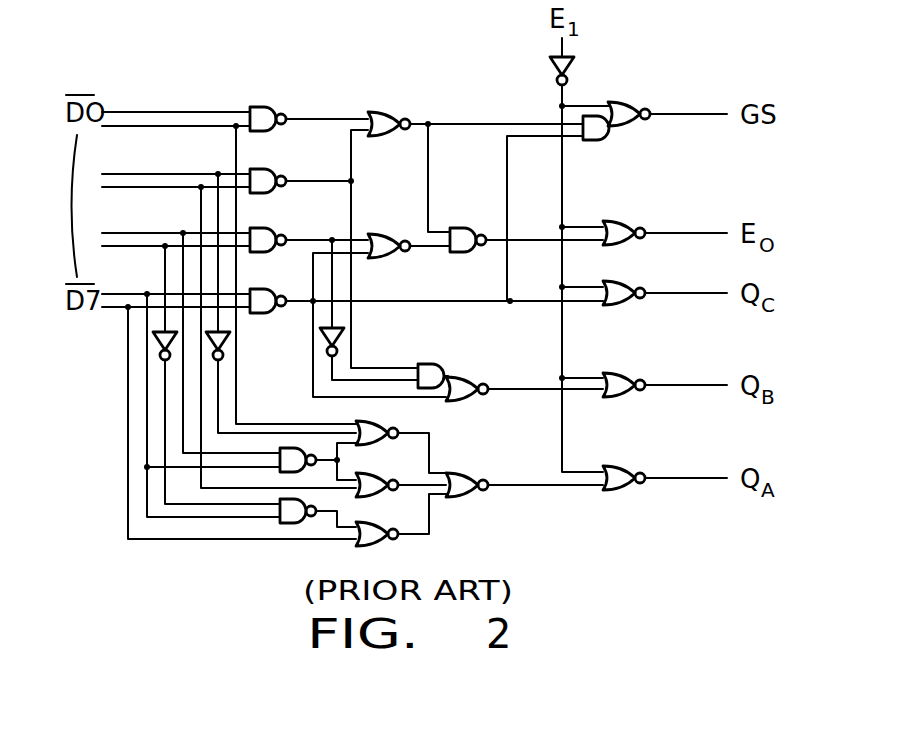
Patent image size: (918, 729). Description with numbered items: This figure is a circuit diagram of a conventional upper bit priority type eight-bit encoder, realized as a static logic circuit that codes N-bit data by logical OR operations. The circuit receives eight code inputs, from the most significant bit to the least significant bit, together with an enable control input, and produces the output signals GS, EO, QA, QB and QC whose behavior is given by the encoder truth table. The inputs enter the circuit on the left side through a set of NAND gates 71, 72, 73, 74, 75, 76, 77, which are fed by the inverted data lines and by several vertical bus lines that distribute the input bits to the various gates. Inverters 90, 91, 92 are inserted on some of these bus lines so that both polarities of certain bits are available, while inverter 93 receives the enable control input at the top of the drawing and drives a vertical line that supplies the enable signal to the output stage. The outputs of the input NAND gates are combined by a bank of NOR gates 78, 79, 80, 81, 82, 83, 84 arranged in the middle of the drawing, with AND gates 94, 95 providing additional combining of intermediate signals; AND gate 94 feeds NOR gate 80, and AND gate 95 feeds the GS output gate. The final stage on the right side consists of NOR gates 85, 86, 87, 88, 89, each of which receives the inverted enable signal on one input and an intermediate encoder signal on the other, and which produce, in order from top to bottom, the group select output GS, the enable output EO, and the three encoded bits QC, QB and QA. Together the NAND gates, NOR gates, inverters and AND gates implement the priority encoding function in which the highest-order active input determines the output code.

The NAND gate 71 is at (268, 108).
The NAND gate 72 is at (264, 170).
The NAND gate 73 is at (264, 229).
The NAND gate 74 is at (264, 290).
The NAND gate 75 is at (462, 229).
The NAND gate 76 is at (283, 472).
The NAND gate 77 is at (285, 524).
The NOR gate 78 is at (384, 113).
The NOR gate 79 is at (382, 235).
The NOR gate 80 is at (472, 378).
The NOR gate 81 is at (380, 422).
The NOR gate 82 is at (372, 475).
The NOR gate 83 is at (372, 524).
The NOR gate 84 is at (470, 473).
The NOR gate 85 is at (640, 102).
The NOR gate 86 is at (630, 222).
The NOR gate 87 is at (632, 283).
The NOR gate 88 is at (632, 375).
The NOR gate 89 is at (632, 467).
The inverter 90 is at (153, 340).
The inverter 91 is at (230, 340).
The inverter 92 is at (344, 333).
The inverter 93 is at (574, 62).
The AND gate 94 is at (433, 365).
The AND gate 95 is at (590, 141).